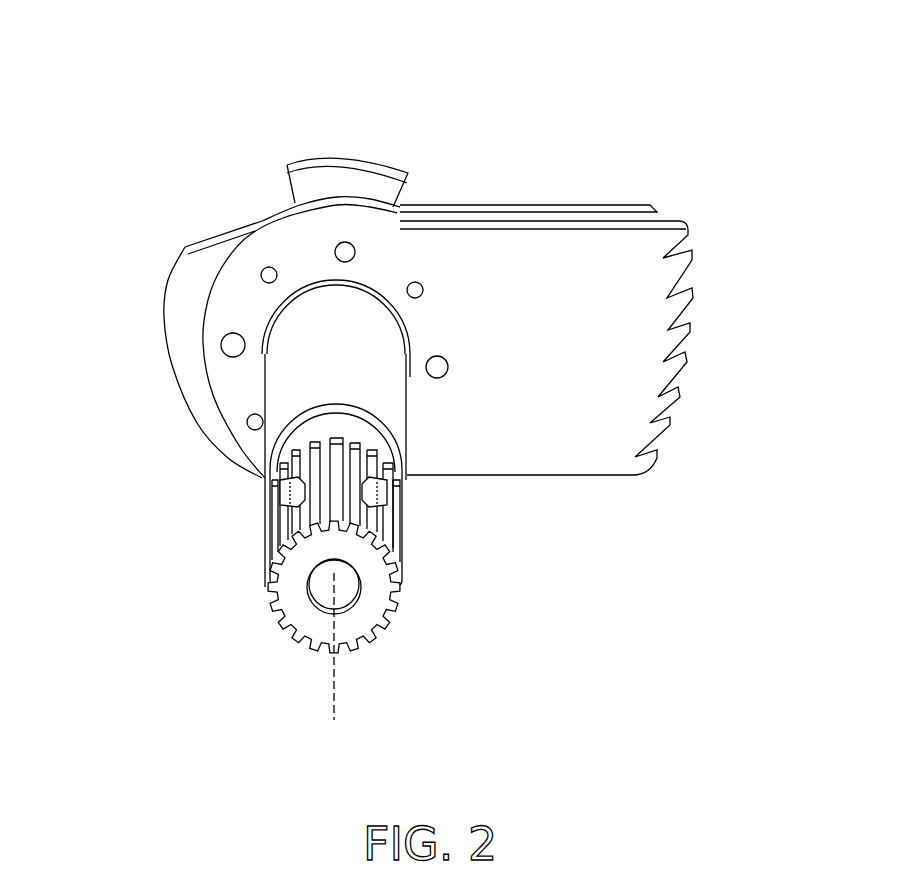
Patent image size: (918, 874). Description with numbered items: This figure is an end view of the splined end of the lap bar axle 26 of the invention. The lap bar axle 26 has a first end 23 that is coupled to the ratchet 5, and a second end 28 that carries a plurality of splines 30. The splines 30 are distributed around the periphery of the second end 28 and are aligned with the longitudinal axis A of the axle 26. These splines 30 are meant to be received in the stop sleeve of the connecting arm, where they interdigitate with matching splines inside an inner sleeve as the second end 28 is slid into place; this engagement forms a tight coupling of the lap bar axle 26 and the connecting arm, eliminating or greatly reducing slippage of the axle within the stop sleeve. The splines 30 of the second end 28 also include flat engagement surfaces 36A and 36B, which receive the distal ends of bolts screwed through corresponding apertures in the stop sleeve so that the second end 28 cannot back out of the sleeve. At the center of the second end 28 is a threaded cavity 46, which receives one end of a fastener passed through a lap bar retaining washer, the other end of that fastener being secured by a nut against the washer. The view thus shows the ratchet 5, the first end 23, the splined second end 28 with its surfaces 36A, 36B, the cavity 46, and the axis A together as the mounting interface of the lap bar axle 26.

The ratchet 5 is at (520, 277).
The first end 23 is at (360, 312).
The lap bar axle 26 is at (318, 367).
The second end 28 is at (251, 594).
The splines 30 is at (370, 440).
The flat engagement surface 36A is at (297, 497).
The flat engagement surface 36B is at (382, 498).
The threaded cavity 46 is at (348, 574).
The longitudinal axis A is at (334, 678).